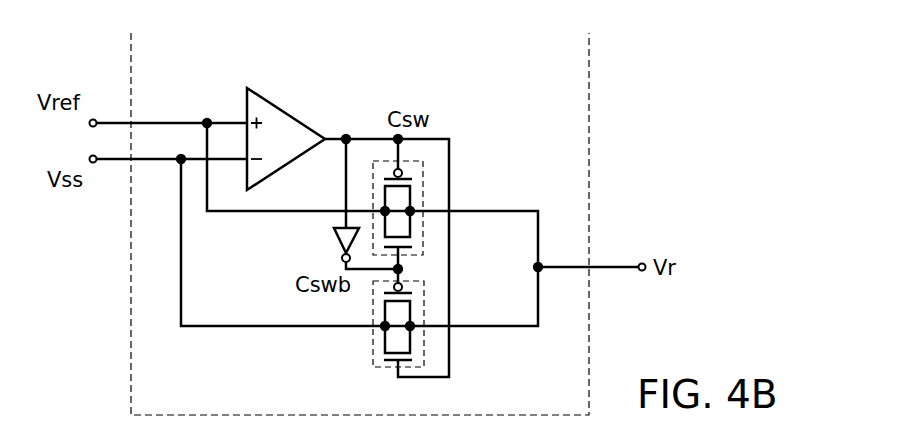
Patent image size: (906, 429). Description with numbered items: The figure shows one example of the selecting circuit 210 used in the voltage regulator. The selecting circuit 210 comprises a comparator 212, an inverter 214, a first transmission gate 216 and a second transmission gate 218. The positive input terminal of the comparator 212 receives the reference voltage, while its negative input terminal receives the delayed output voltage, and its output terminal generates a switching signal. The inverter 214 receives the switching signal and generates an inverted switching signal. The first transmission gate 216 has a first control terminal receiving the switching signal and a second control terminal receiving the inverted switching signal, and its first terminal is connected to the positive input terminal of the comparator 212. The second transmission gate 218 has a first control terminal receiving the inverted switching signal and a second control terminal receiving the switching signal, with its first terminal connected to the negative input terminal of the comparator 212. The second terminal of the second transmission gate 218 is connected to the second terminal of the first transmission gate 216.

The selecting circuit 210 is at (498, 70).
The comparator 212 is at (273, 99).
The inverter 214 is at (335, 241).
The first transmission gate 216 is at (424, 176).
The second transmission gate 218 is at (373, 337).